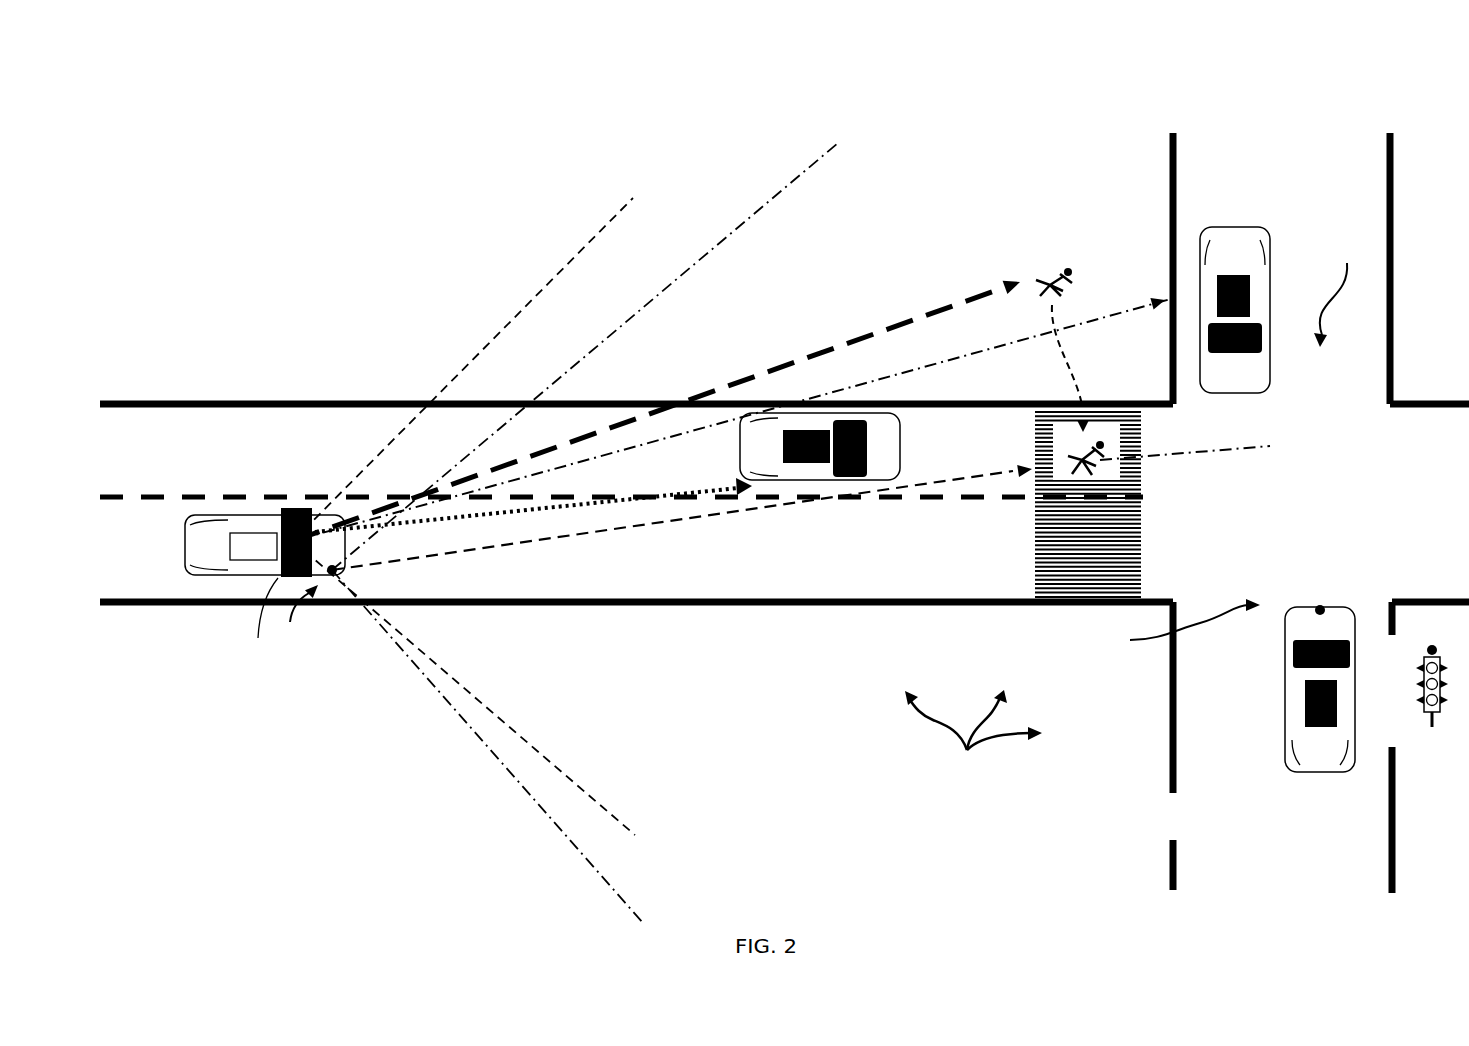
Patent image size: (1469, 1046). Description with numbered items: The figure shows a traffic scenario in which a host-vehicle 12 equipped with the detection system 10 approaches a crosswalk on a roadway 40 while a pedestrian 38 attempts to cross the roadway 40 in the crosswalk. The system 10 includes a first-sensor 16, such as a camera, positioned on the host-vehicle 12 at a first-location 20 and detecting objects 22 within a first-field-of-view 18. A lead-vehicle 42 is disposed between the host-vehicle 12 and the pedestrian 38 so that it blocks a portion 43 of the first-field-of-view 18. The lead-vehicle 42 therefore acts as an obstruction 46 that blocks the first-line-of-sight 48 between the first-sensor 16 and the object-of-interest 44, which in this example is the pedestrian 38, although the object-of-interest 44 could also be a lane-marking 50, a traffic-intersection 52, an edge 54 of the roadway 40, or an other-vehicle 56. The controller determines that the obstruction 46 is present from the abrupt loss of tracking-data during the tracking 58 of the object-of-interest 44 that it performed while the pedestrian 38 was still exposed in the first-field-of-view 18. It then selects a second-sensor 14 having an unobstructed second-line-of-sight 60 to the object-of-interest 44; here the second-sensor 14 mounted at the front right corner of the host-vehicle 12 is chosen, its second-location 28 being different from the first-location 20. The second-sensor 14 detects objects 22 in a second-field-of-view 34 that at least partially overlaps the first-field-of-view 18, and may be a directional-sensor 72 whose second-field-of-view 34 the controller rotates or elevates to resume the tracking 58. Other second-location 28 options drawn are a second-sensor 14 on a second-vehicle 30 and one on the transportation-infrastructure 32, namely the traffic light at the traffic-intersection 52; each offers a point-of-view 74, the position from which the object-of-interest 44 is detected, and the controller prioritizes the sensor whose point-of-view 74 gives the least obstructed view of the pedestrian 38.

The detection system 10 is at (212, 540).
The host-vehicle 12 is at (263, 503).
The second-sensor 14 is at (332, 576).
The first-sensor 16 is at (250, 580).
The first-field-of-view 18 is at (628, 270).
The first-location 20 is at (288, 505).
The objects 22 is at (967, 738).
The second-location 28 is at (1428, 652).
The second-vehicle 30 is at (1317, 780).
The transportation-infrastructure 32 is at (784, 534).
The second-field-of-view 34 is at (818, 195).
The pedestrian 38 is at (1112, 80).
The roadway 40 is at (784, 513).
The lead-vehicle 42 is at (815, 407).
The portion 43 is at (1178, 302).
The object-of-interest 44 is at (1065, 261).
The obstruction 46 is at (835, 492).
The first-line-of-sight 48 is at (747, 487).
The lane-marking 50 is at (377, 497).
The traffic-intersection 52 is at (1335, 289).
The edge 54 is at (517, 402).
The other-vehicle 56 is at (1235, 223).
The tracking 58 is at (955, 300).
The second-line-of-sight 60 is at (580, 527).
The directional-sensor 72 is at (334, 575).
The point-of-view 74 is at (340, 568).